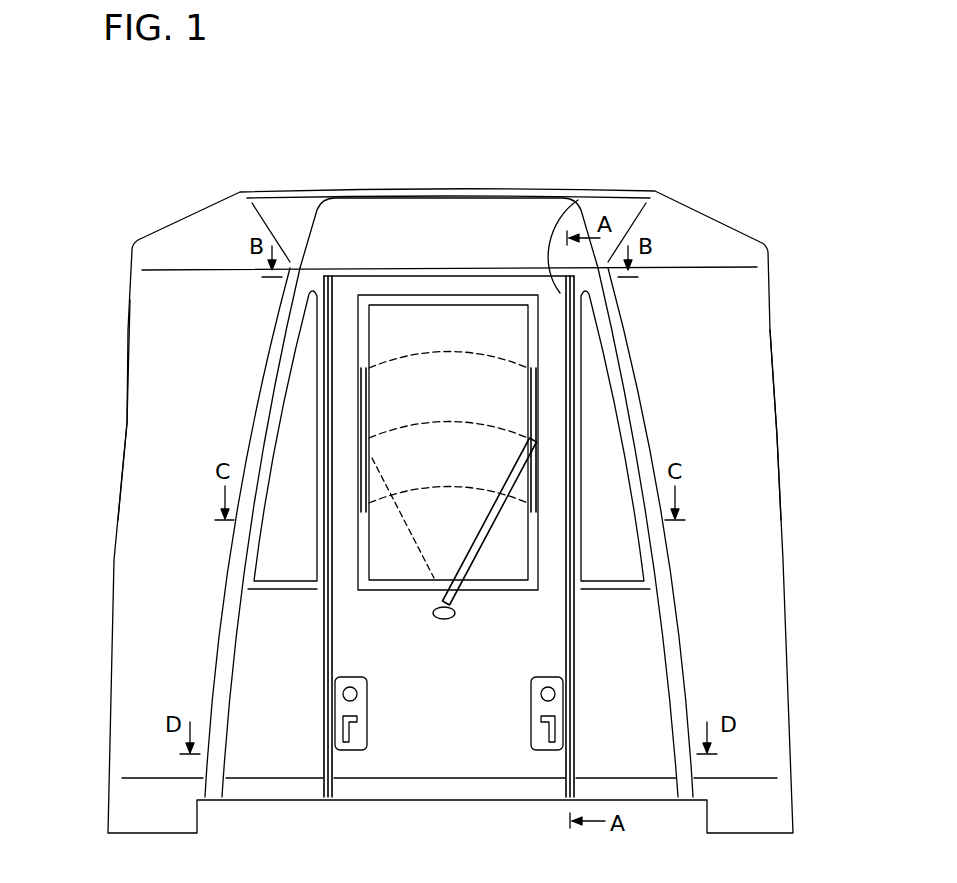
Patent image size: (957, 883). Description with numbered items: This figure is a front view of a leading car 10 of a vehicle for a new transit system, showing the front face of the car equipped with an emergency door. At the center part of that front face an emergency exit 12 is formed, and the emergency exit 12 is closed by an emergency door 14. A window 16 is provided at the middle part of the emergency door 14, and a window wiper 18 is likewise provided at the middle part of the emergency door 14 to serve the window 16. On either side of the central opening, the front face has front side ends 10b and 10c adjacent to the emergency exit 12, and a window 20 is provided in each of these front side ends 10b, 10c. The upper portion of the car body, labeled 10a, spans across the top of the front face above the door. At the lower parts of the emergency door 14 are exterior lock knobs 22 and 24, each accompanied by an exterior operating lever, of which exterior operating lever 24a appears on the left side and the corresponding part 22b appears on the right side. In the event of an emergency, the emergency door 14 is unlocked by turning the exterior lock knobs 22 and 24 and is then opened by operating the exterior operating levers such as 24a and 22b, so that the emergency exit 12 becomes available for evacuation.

The leading car 10 is at (354, 186).
The roof 10a is at (638, 192).
The front side end 10b is at (755, 436).
The front side end 10c is at (135, 423).
The emergency exit 12 is at (553, 218).
The emergency door 14 is at (413, 292).
The window 16 is at (397, 566).
The window wiper 18 is at (484, 550).
The window 20 is at (291, 426).
The exterior lock knob 22 is at (562, 680).
The right door lever 22b is at (539, 732).
The exterior lock knob 24 is at (335, 682).
The exterior operating lever 24a is at (359, 730).